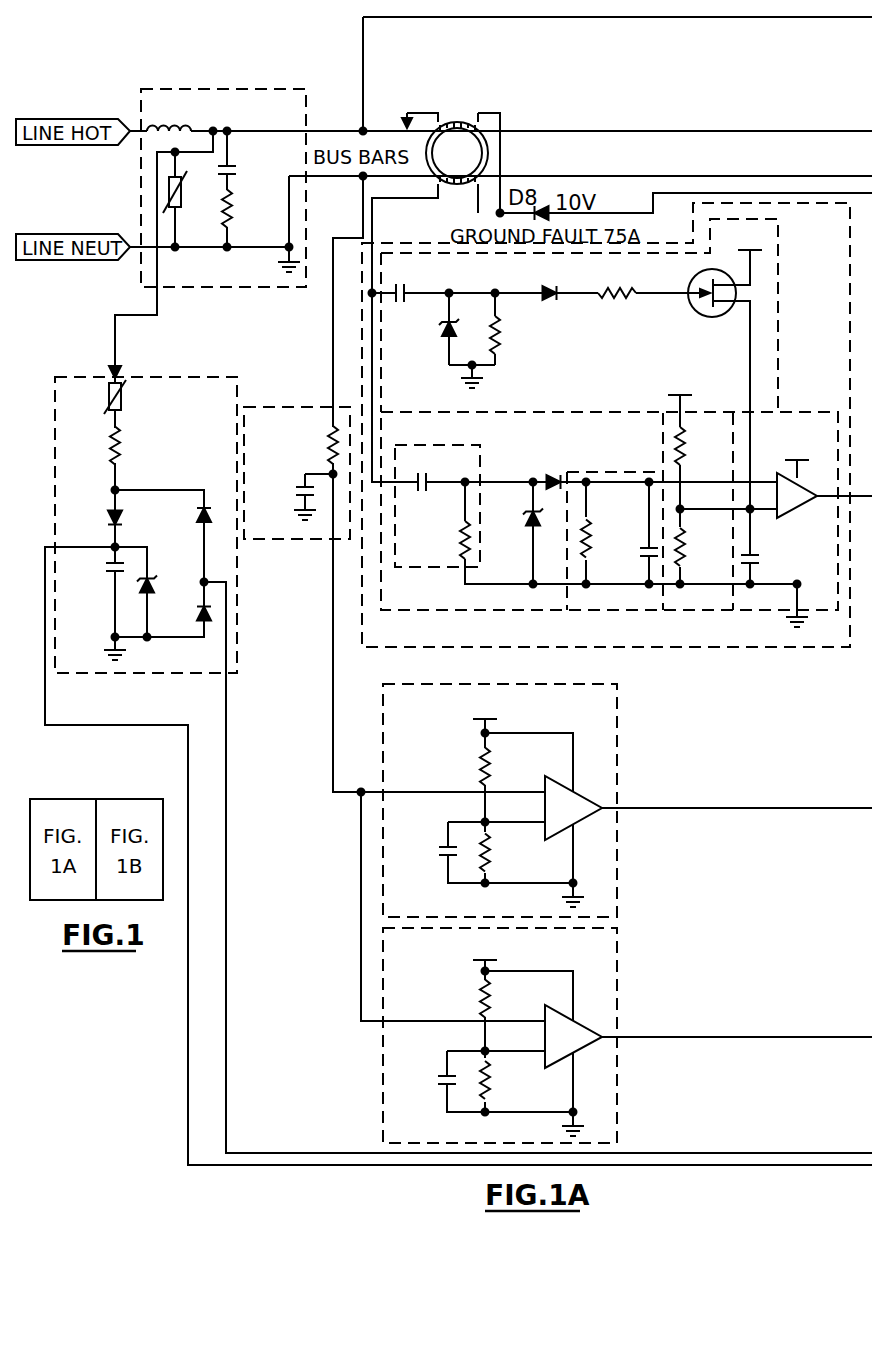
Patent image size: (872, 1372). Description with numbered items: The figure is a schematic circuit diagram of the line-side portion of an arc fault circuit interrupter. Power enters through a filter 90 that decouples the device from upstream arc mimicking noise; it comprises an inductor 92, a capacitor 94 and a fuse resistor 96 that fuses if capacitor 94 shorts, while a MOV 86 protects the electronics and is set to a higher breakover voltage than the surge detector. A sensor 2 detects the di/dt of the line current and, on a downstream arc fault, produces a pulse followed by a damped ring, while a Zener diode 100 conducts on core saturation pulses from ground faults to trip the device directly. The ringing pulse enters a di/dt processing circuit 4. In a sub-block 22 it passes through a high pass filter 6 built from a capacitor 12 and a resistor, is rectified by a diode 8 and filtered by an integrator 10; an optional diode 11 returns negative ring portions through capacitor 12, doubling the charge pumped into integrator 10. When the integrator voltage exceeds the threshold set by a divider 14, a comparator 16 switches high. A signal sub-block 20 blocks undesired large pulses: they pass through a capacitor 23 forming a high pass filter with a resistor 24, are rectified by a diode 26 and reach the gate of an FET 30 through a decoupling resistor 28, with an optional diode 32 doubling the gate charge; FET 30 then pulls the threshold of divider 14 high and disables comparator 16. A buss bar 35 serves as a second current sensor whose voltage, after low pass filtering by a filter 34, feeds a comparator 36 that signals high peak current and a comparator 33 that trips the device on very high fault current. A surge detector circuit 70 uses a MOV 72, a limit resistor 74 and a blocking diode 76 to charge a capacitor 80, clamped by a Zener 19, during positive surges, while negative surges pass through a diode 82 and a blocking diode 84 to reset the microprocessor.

The sensor 2 is at (447, 122).
The di/dt processing circuit 4 is at (365, 650).
The high pass filter 6 is at (596, 528).
The diode 8 is at (549, 490).
The integrator 10 is at (645, 472).
The diode 11 is at (533, 530).
The capacitor 12 is at (418, 492).
The divider 14 is at (658, 578).
The comparator 16 is at (797, 510).
The Zener 19 is at (141, 600).
The signal sub-block 20 is at (601, 364).
The sub-block 22 is at (626, 512).
The capacitor 23 is at (410, 290).
The resistor 24 is at (498, 354).
The diode 26 is at (549, 300).
The decoupling resistor 28 is at (617, 300).
The FET 30 is at (708, 317).
The diode 32 is at (447, 337).
The comparator 33 is at (617, 732).
The filter 34 is at (300, 541).
The buss bar 35 is at (337, 180).
The comparator 36 is at (382, 1055).
The surge detector circuit 70 is at (155, 509).
The MOV 72 is at (122, 402).
The limit resistor 74 is at (125, 447).
The blocking diode 76 is at (108, 516).
The capacitor 80 is at (108, 585).
The diode 82 is at (208, 623).
The blocking diode 84 is at (214, 478).
The MOV 86 is at (178, 207).
The filter 90 is at (223, 170).
The inductor 92 is at (174, 123).
The capacitor 94 is at (236, 162).
The fuse resistor 96 is at (238, 210).
The Zener diode 100 is at (546, 203).